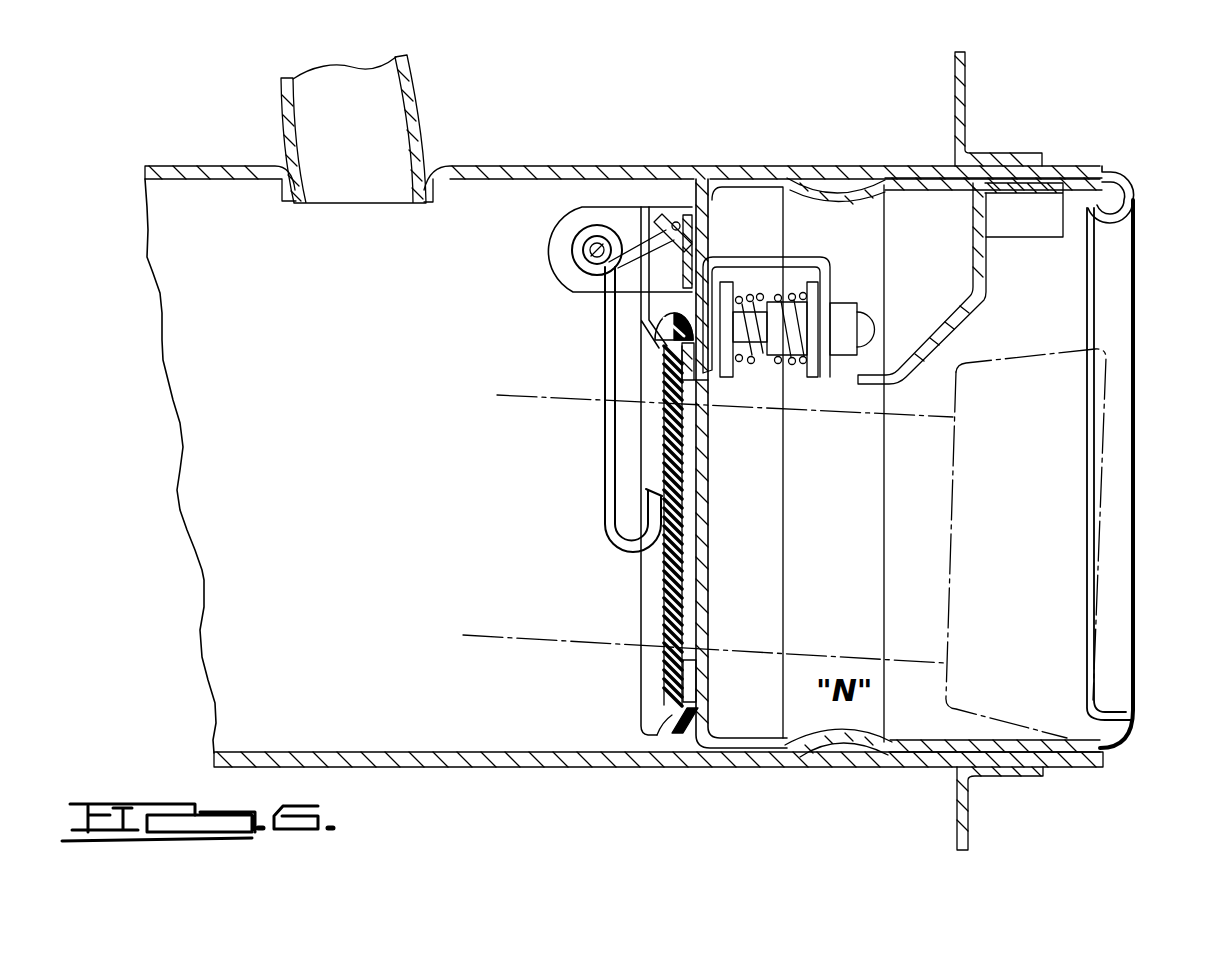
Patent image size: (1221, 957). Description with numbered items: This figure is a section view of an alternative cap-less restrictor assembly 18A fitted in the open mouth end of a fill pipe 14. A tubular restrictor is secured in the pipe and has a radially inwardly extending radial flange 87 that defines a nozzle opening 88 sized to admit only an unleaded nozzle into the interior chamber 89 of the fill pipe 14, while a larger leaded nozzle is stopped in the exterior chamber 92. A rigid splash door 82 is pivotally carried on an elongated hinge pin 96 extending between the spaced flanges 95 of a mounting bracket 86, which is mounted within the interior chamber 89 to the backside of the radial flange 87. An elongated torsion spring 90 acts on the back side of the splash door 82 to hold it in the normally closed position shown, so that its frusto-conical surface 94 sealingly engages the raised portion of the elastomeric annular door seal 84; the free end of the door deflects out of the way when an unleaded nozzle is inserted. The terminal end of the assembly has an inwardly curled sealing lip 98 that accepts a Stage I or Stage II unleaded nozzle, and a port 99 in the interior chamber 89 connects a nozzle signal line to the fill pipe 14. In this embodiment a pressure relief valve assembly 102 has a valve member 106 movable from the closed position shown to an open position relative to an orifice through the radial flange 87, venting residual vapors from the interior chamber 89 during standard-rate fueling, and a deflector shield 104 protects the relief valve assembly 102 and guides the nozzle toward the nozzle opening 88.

The fill pipe 14 is at (500, 768).
The cap-less restrictor assembly 18A is at (913, 182).
The splash door 82 is at (641, 690).
The annular door seal 84 is at (692, 726).
The mounting bracket 86 is at (600, 208).
The radial flange 87 is at (697, 678).
The nozzle opening 88 is at (675, 650).
The interior chamber 89 is at (446, 278).
The torsion spring 90 is at (610, 547).
The exterior chamber 92 is at (775, 232).
The frusto-conical surface 94 is at (668, 726).
The spaced flanges 95 is at (657, 212).
The hinge pin 96 is at (575, 263).
The curled sealing lip 98 is at (1112, 240).
The port 99 is at (395, 108).
The pressure relief valve assembly 102 is at (841, 286).
The deflector shield 104 is at (986, 272).
The valve member 106 is at (725, 378).